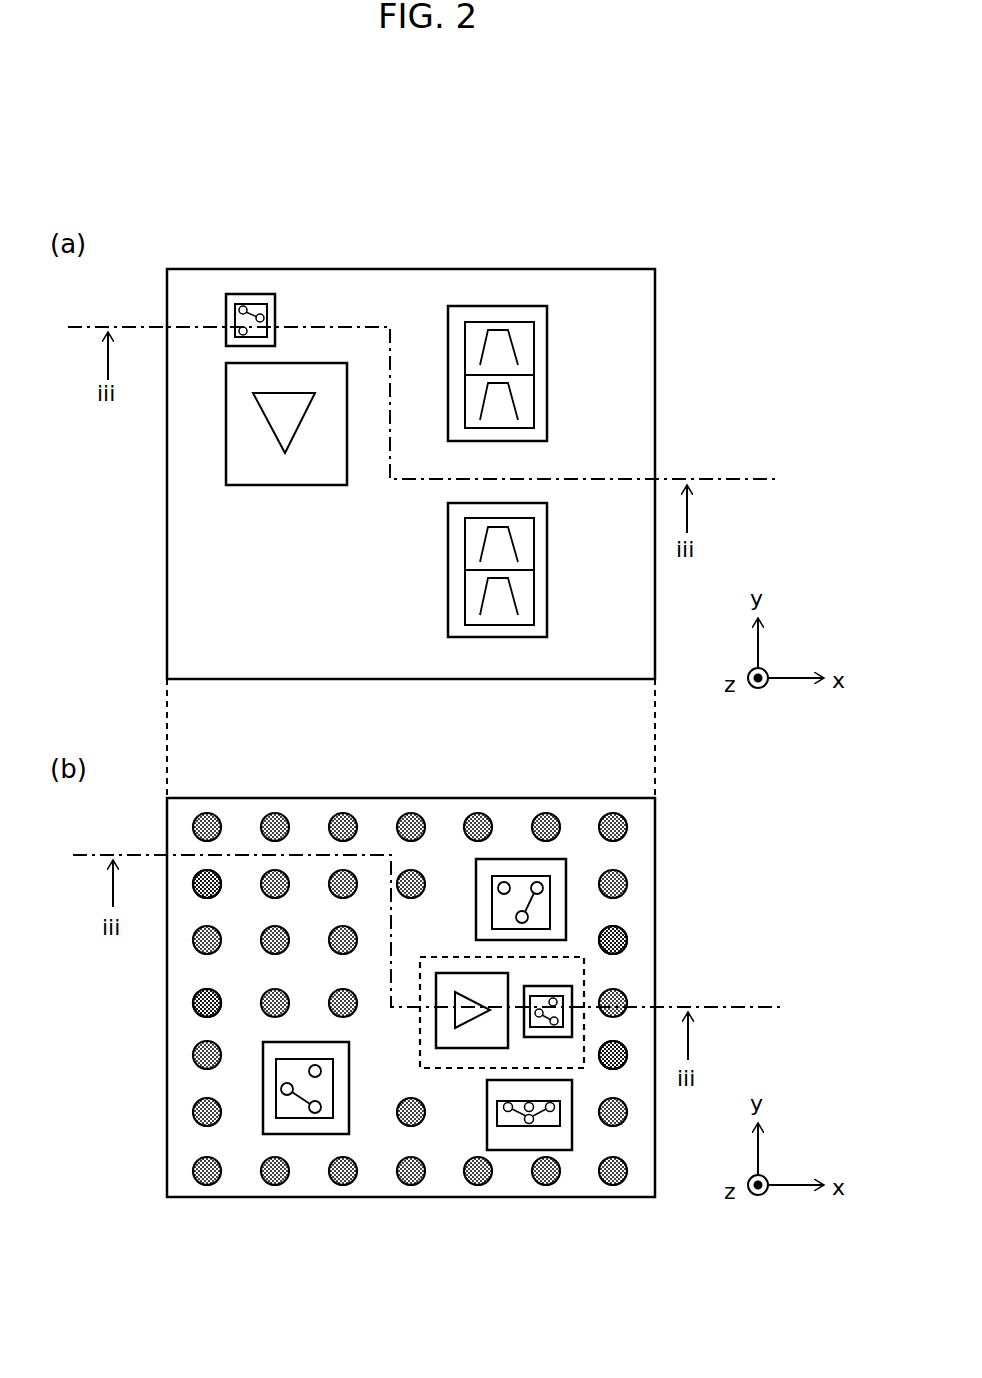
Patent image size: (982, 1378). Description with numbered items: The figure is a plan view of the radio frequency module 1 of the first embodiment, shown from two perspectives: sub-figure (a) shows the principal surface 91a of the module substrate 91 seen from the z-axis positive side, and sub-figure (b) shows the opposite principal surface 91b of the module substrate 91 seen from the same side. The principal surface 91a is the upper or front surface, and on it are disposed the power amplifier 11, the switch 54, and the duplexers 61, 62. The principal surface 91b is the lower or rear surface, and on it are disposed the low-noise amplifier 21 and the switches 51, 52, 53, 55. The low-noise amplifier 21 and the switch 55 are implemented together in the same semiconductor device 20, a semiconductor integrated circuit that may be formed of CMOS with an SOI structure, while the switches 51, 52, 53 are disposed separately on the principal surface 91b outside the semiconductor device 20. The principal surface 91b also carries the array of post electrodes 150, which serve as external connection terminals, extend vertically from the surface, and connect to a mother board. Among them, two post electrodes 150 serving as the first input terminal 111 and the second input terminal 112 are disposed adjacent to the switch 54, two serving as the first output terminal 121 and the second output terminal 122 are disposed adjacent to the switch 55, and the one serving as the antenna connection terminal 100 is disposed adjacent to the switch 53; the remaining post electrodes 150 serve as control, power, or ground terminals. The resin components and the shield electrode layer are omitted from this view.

The radio frequency module 1 is at (745, 281).
The power amplifier 11 is at (287, 485).
The semiconductor device 20 is at (420, 1034).
The low-noise amplifier 21 is at (462, 973).
The switch 51 is at (349, 1085).
The switch 52 is at (476, 887).
The switch 53 is at (487, 1118).
The switch 54 is at (275, 318).
The switch 55 is at (563, 986).
The duplexer 61 is at (547, 360).
The duplexer 62 is at (547, 570).
The module substrate 91 is at (545, 268).
The principal surface 91a is at (640, 300).
The principal surface 91b is at (645, 822).
The antenna connection terminal 100 is at (550, 1185).
The first input terminal 111 is at (195, 890).
The second input terminal 112 is at (193, 1004).
The first output terminal 121 is at (627, 942).
The second output terminal 122 is at (624, 1048).
The post electrodes 150 is at (717, 897).